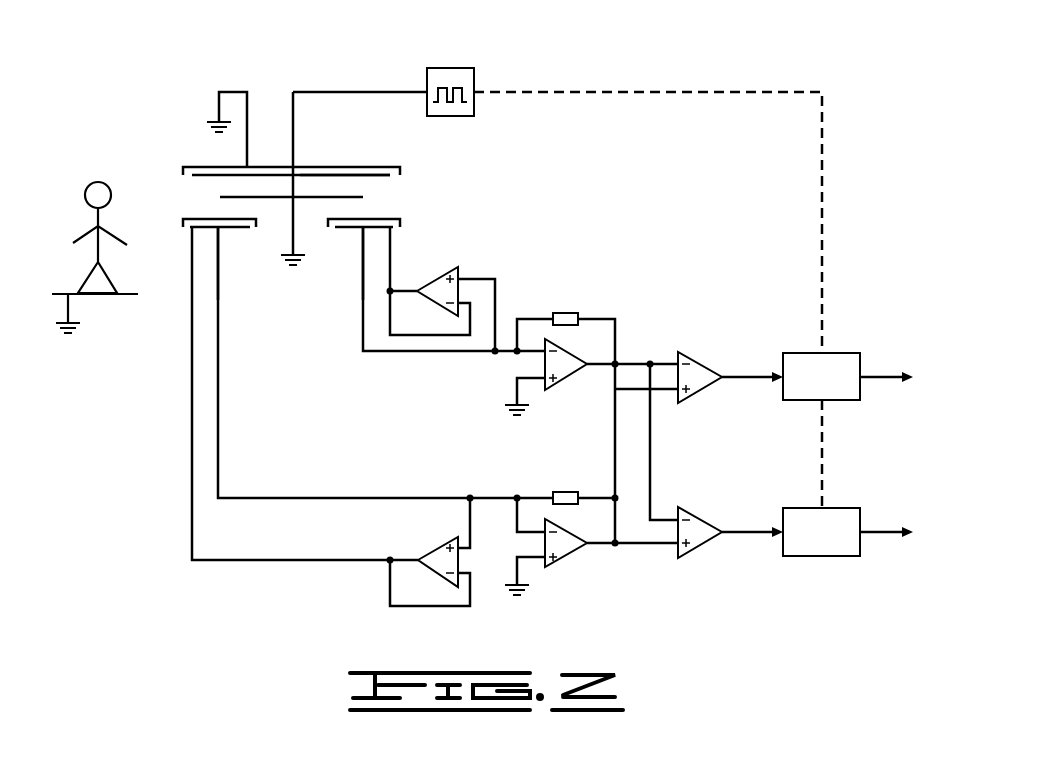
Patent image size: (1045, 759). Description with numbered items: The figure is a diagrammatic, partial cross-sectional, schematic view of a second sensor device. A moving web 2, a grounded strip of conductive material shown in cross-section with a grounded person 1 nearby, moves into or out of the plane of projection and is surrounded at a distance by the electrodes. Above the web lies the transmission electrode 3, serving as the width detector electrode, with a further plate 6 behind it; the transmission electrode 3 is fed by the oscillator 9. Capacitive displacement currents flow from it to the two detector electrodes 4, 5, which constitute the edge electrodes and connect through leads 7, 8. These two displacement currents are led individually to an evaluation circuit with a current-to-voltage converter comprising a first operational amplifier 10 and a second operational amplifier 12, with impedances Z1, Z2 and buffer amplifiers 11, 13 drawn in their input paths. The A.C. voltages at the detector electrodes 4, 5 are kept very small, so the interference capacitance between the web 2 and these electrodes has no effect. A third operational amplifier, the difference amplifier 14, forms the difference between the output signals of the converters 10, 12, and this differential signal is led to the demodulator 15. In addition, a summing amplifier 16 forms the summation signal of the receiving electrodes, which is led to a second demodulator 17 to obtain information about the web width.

The person (object to be detected) 1 is at (83, 220).
The web 2 is at (230, 197).
The transmission electrode 3 is at (382, 175).
The detector electrode 4 is at (200, 219).
The detector electrode 5 is at (380, 219).
The shield plate 6 is at (210, 167).
The lead to plate 4' 7 is at (241, 227).
The lead to plate 5' 8 is at (338, 227).
The oscillator 9 is at (455, 68).
The first operational amplifier 10 is at (566, 375).
The buffer amplifier 11 is at (440, 279).
The second operational amplifier 12 is at (570, 543).
The buffer amplifier 13 is at (444, 560).
The difference amplifier 14 is at (703, 381).
The demodulator 15 is at (843, 353).
The amplifier 16 is at (710, 533).
The demodulator 17 is at (845, 508).
The feedback impedance Z1 is at (563, 303).
The feedback impedance Z2 is at (563, 484).